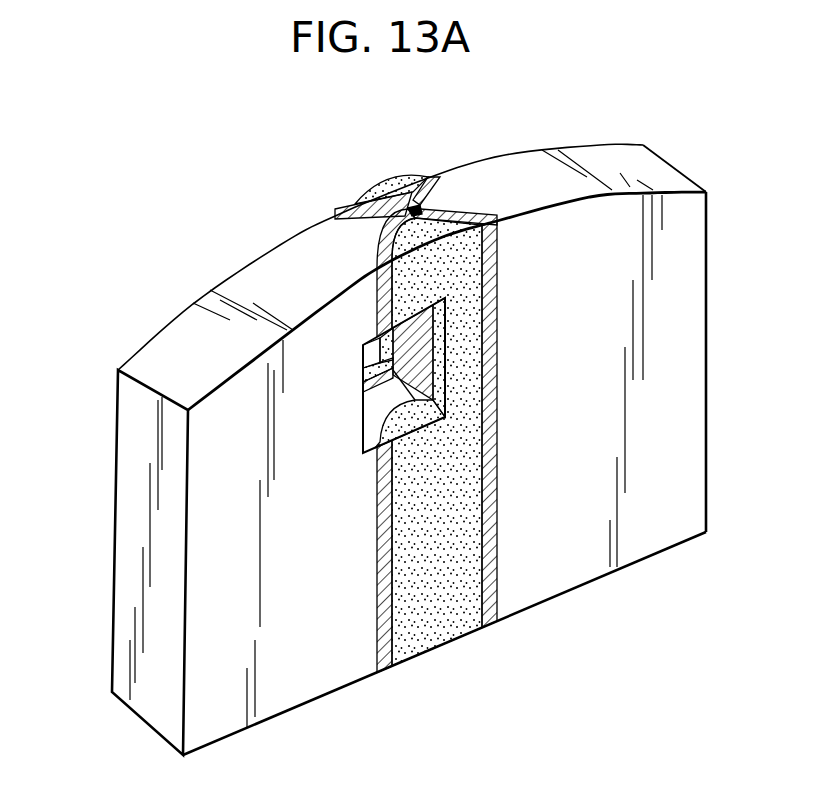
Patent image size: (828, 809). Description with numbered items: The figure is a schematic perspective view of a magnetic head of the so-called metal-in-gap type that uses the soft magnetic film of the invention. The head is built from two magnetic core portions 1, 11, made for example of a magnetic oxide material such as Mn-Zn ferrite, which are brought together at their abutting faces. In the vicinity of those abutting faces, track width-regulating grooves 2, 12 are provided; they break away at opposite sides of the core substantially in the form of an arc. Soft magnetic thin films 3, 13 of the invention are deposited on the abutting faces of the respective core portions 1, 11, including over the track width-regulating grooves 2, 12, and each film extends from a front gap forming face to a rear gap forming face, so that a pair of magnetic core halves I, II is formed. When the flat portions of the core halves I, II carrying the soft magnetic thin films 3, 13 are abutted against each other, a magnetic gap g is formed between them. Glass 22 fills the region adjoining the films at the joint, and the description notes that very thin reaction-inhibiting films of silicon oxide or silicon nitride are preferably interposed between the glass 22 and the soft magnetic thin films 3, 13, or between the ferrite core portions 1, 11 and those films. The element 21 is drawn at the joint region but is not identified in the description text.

The magnetic core portion 1 is at (197, 308).
The magnetic core portion 11 is at (616, 155).
The track width-regulating groove 2 is at (355, 204).
The soft magnetic thin film 3 is at (340, 211).
The track width-regulating groove 12 is at (422, 180).
The soft magnetic thin film 13 is at (436, 178).
The connecting fitting 21 is at (366, 416).
The glass 22 is at (387, 190).
The magnetic gap g is at (422, 207).
The magnetic core half I is at (112, 504).
The magnetic core half II is at (716, 374).